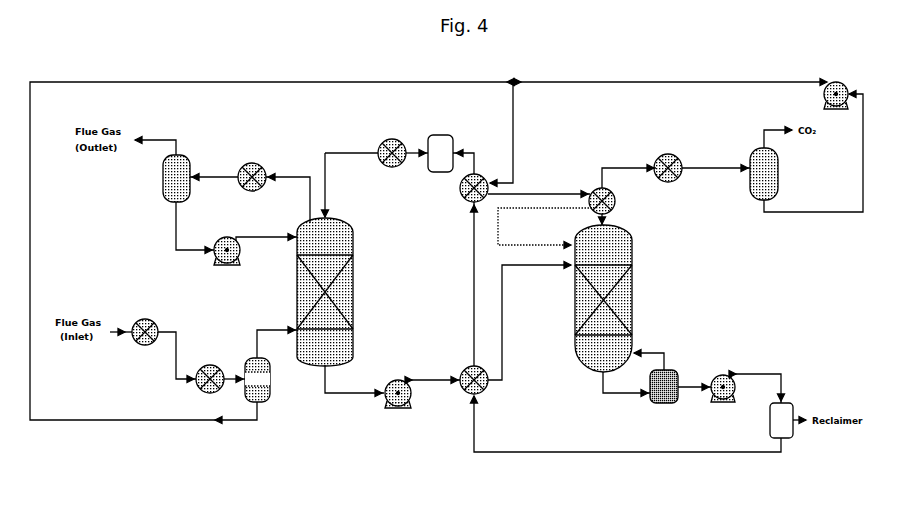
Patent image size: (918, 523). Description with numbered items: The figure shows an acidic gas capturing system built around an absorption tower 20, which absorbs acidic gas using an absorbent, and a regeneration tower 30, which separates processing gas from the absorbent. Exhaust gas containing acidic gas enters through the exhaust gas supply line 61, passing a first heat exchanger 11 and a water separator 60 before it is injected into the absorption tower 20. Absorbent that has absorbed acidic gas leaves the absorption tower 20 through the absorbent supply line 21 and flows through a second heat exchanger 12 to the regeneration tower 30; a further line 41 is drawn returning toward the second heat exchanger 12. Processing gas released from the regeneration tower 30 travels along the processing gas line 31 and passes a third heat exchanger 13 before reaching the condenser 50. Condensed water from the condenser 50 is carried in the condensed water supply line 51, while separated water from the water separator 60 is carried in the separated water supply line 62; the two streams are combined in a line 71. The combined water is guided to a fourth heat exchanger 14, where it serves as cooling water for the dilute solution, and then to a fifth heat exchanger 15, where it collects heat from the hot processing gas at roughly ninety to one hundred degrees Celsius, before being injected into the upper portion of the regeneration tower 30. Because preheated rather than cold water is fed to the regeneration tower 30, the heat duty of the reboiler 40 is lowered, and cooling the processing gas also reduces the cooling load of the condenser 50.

The first heat exchanger 11 is at (192, 392).
The second heat exchanger 12 is at (459, 396).
The third heat exchanger 13 is at (680, 155).
The fourth heat exchanger 14 is at (458, 195).
The fifth heat exchanger 15 is at (618, 205).
The absorption tower 20 is at (351, 287).
The absorbent supply line 21 is at (437, 378).
The regeneration tower 30 is at (633, 298).
The CO2 gas discharge line 31 is at (609, 166).
The reboiler 40 is at (652, 405).
The lean absorbent solution return line 41 is at (518, 455).
The condenser 50 is at (780, 176).
The condensed water supply line 51 is at (832, 215).
The water separator 60 is at (272, 395).
The exhaust gas supply line 61 is at (256, 329).
The separated water supply line 62 is at (72, 422).
The line 71 is at (513, 143).